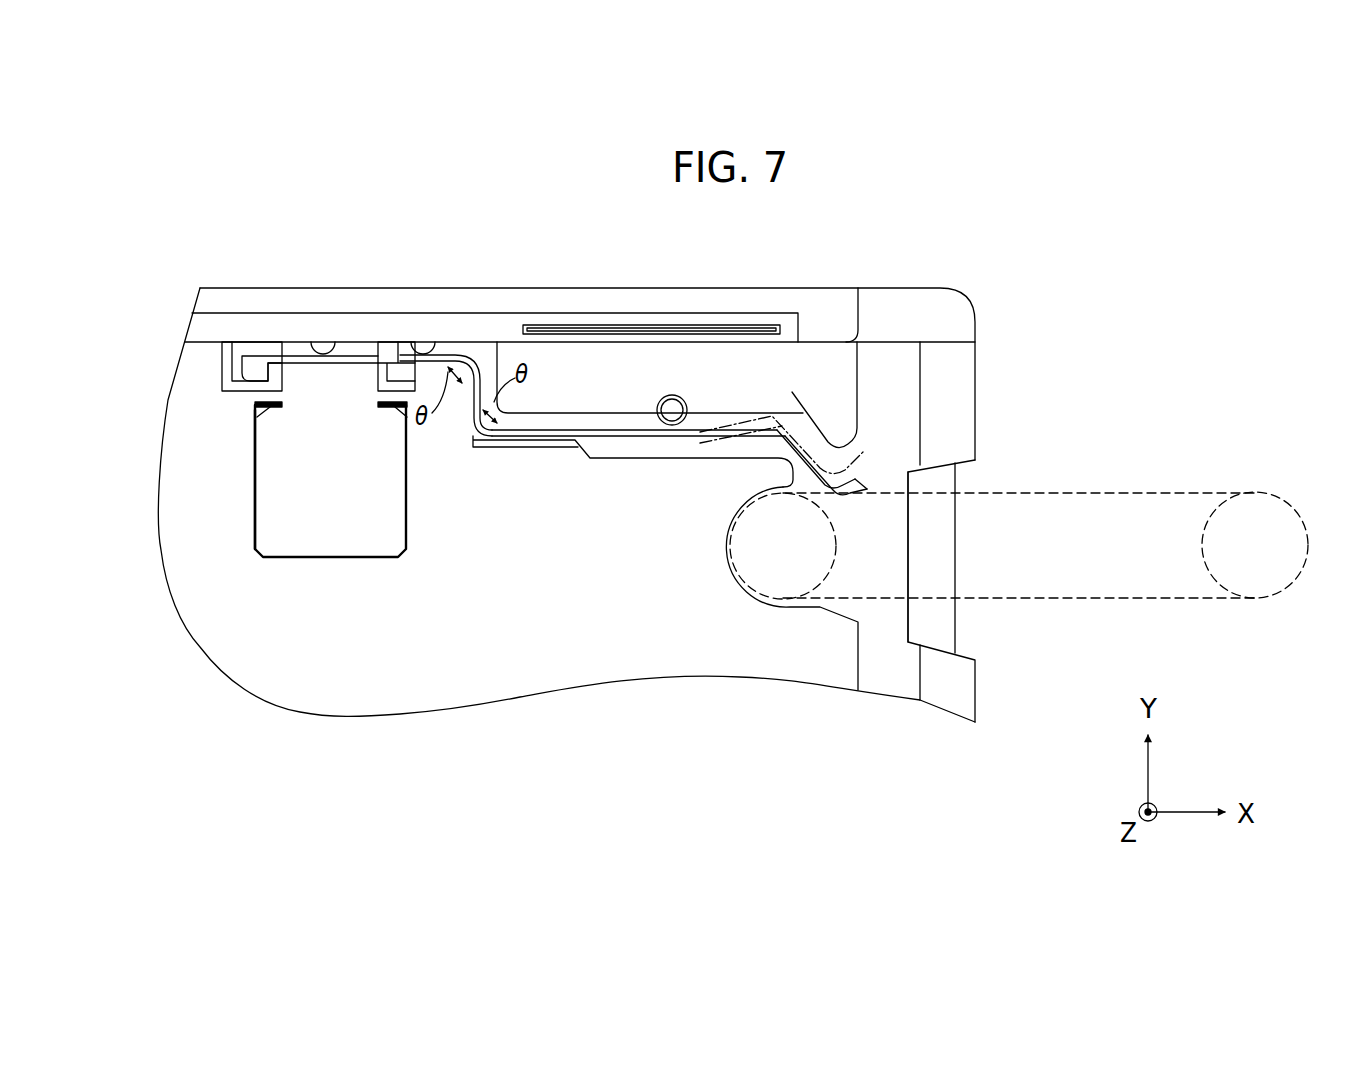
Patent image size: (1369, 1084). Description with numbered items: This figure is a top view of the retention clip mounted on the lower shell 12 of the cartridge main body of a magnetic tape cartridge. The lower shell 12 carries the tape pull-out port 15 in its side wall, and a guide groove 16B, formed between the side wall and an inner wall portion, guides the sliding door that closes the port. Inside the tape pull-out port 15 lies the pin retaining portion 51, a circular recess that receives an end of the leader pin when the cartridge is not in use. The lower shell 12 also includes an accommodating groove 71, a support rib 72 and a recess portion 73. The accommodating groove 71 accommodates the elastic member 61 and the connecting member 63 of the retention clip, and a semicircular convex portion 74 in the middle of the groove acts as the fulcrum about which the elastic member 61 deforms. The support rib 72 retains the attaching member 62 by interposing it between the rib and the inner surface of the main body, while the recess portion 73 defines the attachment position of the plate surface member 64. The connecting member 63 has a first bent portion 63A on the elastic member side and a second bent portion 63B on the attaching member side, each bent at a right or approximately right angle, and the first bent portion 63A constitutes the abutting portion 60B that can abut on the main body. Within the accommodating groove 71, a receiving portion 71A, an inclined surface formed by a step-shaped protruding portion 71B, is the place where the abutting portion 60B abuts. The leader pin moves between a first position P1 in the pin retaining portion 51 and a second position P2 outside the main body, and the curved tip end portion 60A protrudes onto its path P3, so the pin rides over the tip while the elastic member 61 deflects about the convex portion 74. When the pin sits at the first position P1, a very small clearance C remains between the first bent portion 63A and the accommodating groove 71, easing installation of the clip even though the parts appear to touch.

The lower shell 12 is at (1017, 292).
The tape pull-out port 15 is at (936, 477).
The guide groove 16B is at (883, 682).
The pin retaining portion 51 is at (783, 610).
The curved tip end portion 60A is at (860, 478).
The abutting portion 60B is at (719, 499).
The elastic member 61 is at (630, 432).
The attaching member 62 is at (262, 354).
The connecting member 63 is at (485, 398).
The first bent portion 63A is at (480, 437).
The second bent portion 63B is at (446, 362).
The plate surface member 64 is at (307, 487).
The accommodating groove 71 is at (586, 412).
The receiving portion 71A is at (470, 433).
The protruding portion 71B is at (462, 425).
The support rib 72 is at (398, 378).
The recess portion 73 is at (253, 525).
The convex portion 74 is at (673, 395).
The clearance C is at (473, 433).
The first position P1 is at (783, 546).
The second position P2 is at (1255, 545).
The path P3 is at (1150, 510).